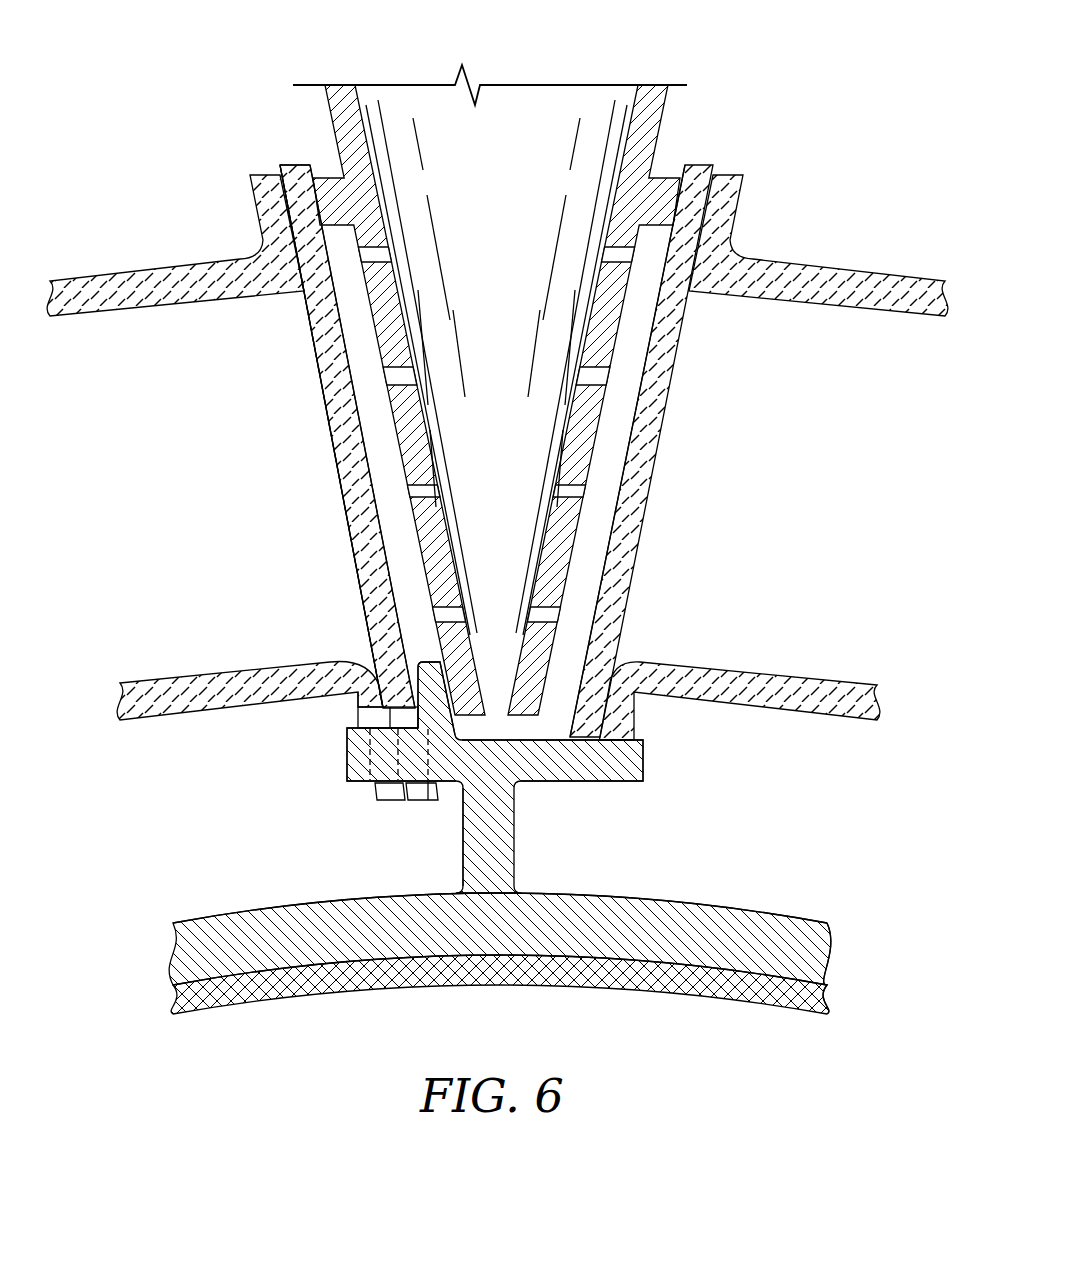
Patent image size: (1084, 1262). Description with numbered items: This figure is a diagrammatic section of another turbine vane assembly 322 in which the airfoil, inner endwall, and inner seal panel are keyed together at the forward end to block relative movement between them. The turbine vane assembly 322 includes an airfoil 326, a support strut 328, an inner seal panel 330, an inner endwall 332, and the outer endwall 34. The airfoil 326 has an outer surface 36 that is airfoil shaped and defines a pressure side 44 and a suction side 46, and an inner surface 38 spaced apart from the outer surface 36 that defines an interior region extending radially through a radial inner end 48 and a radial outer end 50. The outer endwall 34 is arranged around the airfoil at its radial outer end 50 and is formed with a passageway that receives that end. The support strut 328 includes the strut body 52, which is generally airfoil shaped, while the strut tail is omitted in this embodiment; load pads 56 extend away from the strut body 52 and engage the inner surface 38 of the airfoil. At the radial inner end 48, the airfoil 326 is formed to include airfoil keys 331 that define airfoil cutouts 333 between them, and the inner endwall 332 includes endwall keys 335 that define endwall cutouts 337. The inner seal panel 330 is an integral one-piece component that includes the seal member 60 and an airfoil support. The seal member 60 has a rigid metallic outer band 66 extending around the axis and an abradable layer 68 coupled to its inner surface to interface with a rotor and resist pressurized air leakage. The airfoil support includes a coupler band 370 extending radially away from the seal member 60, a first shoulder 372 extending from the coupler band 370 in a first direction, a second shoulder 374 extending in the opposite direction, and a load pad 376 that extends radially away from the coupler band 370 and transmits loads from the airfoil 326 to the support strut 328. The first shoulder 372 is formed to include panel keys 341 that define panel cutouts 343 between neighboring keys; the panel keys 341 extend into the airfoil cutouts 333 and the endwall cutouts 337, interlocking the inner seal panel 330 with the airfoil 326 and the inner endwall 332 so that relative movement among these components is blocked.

The turbine vane assembly 322 is at (163, 86).
The radial outer end 50 is at (292, 156).
The load pads 56 is at (668, 170).
The outer endwall 34 is at (88, 274).
The inner surface 38 is at (343, 328).
The outer surface 36 is at (322, 388).
The airfoil 326 is at (324, 454).
The pressure side 44 is at (330, 490).
The load pad 376 is at (414, 649).
The inner endwall 332 is at (140, 677).
The airfoil keys 331 is at (372, 712).
The endwall keys 335 is at (358, 720).
The panel cutouts 343 is at (371, 750).
The first shoulder 372 is at (339, 755).
The panel keys 341 is at (365, 784).
The endwall cutouts 337 is at (378, 800).
The airfoil cutouts 333 is at (420, 801).
The inner seal panel 330 is at (177, 912).
The radial inner end 48 is at (438, 816).
The strut body 52 is at (539, 540).
The suction side 46 is at (682, 415).
The support strut 328 is at (610, 457).
The second shoulder 374 is at (651, 762).
The coupler band 370 is at (522, 838).
The outer band 66 is at (733, 910).
The seal member 60 is at (782, 912).
The abradable layer 68 is at (712, 1003).